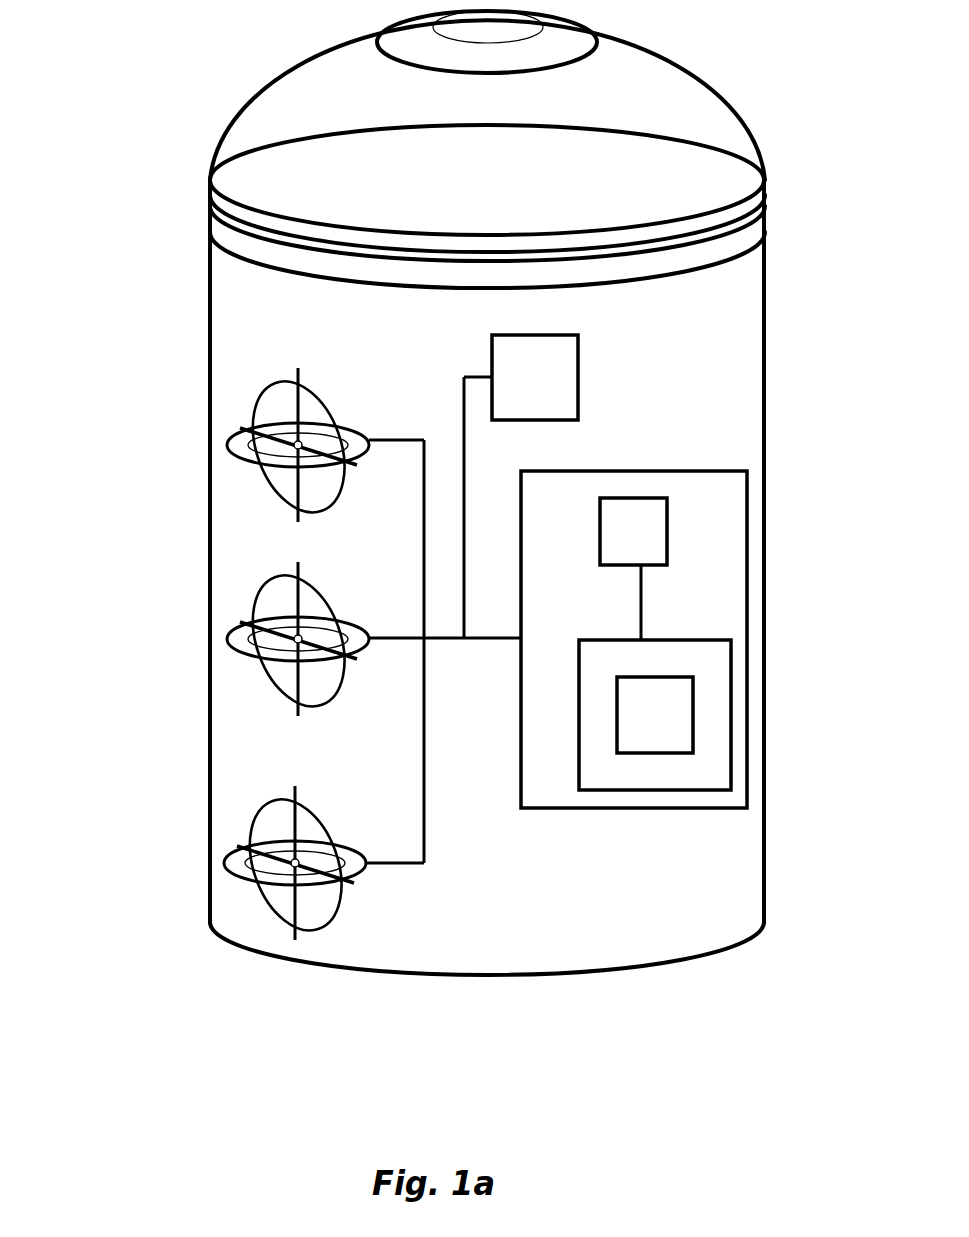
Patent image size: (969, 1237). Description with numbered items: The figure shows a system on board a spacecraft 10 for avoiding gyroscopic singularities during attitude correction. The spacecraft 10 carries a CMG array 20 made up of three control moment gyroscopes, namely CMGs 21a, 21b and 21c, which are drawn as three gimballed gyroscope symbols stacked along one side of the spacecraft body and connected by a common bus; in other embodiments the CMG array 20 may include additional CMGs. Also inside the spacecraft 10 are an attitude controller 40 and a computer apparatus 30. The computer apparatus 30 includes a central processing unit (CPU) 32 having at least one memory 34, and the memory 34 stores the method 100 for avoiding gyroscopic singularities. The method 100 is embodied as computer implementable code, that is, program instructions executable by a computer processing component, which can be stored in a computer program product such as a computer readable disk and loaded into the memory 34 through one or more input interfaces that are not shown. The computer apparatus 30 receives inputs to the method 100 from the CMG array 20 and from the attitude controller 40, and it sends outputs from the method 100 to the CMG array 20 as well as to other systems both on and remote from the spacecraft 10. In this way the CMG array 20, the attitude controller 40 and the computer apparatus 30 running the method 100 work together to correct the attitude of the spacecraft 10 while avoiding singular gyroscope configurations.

The spacecraft 10 is at (210, 187).
The CMG array 20 is at (126, 634).
The CMG 21a is at (228, 449).
The CMG 21b is at (277, 683).
The CMG 21c is at (237, 875).
The computer apparatus 30 is at (747, 471).
The central processing unit 32 is at (648, 545).
The memory 34 is at (717, 713).
The attitude controller 40 is at (550, 390).
The method 100 is at (678, 727).